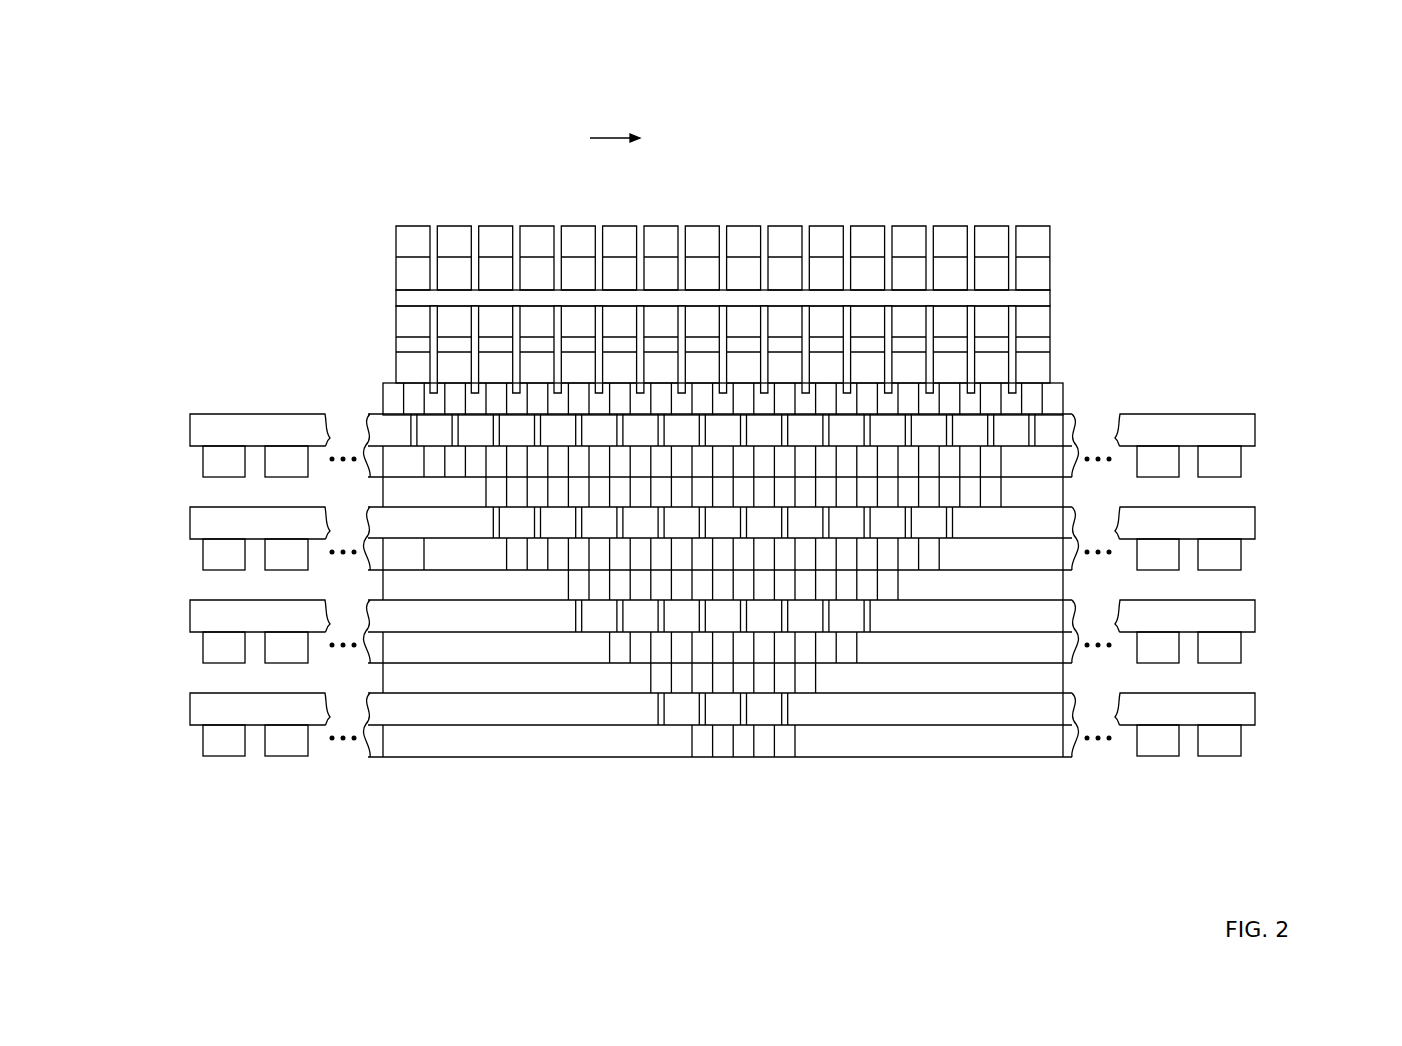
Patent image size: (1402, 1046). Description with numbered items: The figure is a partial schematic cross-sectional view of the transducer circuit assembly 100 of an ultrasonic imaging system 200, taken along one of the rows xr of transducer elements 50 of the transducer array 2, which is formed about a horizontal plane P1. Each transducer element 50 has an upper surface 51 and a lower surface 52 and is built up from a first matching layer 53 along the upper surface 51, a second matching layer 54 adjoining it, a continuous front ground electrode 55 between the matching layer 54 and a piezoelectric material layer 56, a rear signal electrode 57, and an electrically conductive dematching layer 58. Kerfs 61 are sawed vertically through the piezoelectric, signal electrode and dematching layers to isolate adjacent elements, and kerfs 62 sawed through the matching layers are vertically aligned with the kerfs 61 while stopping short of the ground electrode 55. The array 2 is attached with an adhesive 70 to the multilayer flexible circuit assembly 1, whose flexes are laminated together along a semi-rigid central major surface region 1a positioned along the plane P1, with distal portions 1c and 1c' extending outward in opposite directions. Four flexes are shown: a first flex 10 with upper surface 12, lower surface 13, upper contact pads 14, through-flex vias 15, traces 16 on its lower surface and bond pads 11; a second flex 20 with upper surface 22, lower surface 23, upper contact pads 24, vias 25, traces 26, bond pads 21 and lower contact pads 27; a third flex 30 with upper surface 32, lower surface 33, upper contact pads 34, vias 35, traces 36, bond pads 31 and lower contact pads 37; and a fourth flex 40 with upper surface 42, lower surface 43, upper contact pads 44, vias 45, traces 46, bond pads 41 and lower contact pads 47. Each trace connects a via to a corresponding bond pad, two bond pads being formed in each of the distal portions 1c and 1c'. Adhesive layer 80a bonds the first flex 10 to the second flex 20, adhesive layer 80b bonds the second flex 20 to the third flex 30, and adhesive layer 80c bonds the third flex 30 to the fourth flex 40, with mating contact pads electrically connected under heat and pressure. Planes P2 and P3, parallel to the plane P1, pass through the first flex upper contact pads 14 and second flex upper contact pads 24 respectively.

The ultrasonic imaging system 200 is at (1366, 97).
The transducer array 2 is at (322, 160).
The transducer circuit assembly 100 is at (1128, 150).
The multilayer flexible circuit assembly 1 is at (180, 757).
The central major surface region 1a is at (736, 657).
The first distal portion 1c is at (273, 661).
The second distal portion 1c' is at (1203, 646).
The first flex 10 is at (404, 723).
The first flex bond pads 11 is at (240, 753).
The upper surface of first flex 12 is at (1202, 723).
The lower surface of first flex 13 is at (1174, 753).
The first flex upper contact pads 14 is at (788, 681).
The first flex vias 15 is at (692, 716).
The first flex traces 16 is at (460, 755).
The second flex 20 is at (404, 630).
The second flex bond pads 21 is at (240, 660).
The upper surface of second flex 22 is at (1202, 630).
The lower surface of second flex 23 is at (1174, 660).
The second flex upper contact pads 24 is at (750, 587).
The second flex vias 25 is at (650, 609).
The second flex traces 26 is at (472, 661).
The second flex lower contact pads 27 is at (795, 648).
The third flex 30 is at (414, 536).
The third flex bond pads 31 is at (240, 567).
The upper surface of third flex 32 is at (1202, 537).
The lower surface of third flex 33 is at (1174, 567).
The third flex upper contact pads 34 is at (500, 485).
The third flex vias 35 is at (606, 518).
The third flex traces 36 is at (414, 568).
The third flex lower contact pads 37 is at (832, 554).
The fourth flex 40 is at (404, 444).
The fourth flex bond pads 41 is at (240, 474).
The upper surface of fourth flex 42 is at (1202, 444).
The lower surface of fourth flex 43 is at (1174, 474).
The fourth flex upper contact pads 44 is at (447, 430).
The fourth flex vias 45 is at (466, 397).
The fourth flex traces 46 is at (416, 475).
The fourth flex lower contact pads 47 is at (957, 627).
The transducer elements 50 is at (743, 228).
The upper surface of transducer element 51 is at (415, 226).
The lower surface of transducer element 52 is at (416, 384).
The first matching layer 53 is at (403, 242).
The second matching layer 54 is at (403, 280).
The front ground electrode 55 is at (1043, 297).
The piezoelectric material layer 56 is at (403, 323).
The signal electrode 57 is at (757, 279).
The dematching layer 58 is at (403, 367).
The kerfs 61 is at (878, 330).
The kerfs in matching layers 62 is at (1015, 242).
The adhesive 70 is at (1058, 399).
The adhesive layer 80a is at (462, 691).
The adhesive layer 80b is at (474, 598).
The adhesive layer 80c is at (427, 505).
The first plane P1 is at (1322, 310).
The second plane P2 is at (1322, 685).
The third plane P3 is at (1322, 580).
The rows of transducer elements xr is at (615, 155).